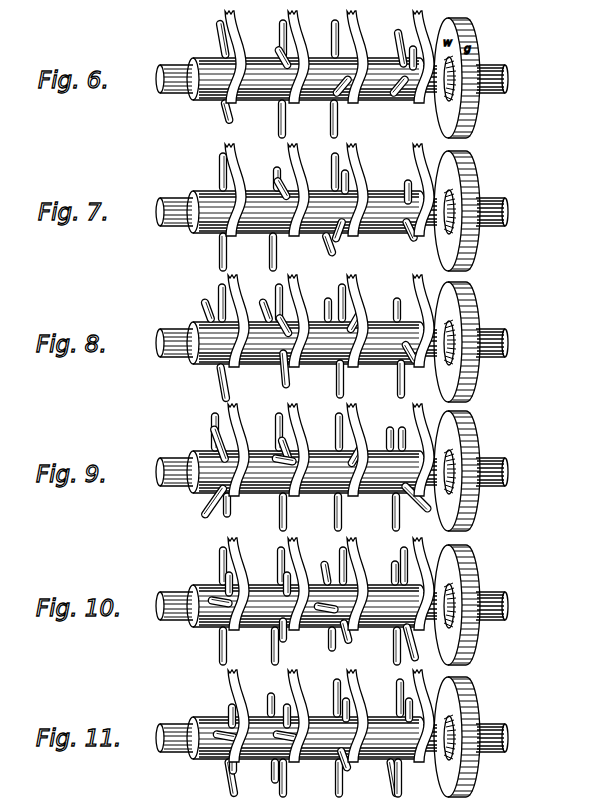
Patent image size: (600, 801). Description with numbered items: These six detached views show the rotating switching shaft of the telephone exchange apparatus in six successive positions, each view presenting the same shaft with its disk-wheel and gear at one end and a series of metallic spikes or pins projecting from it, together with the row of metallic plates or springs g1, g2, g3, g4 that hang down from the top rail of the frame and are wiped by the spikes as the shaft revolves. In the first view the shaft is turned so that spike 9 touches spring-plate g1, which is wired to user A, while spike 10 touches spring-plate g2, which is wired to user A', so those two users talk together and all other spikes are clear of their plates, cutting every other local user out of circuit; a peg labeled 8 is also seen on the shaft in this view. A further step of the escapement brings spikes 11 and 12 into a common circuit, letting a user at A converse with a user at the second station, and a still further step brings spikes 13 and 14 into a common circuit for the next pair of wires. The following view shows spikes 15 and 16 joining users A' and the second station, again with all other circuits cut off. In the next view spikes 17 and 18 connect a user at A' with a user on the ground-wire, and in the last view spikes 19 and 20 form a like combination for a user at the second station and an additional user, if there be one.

In FIG. 6, the peg 8 is at (229, 116).
In FIG. 7, the spike 9 is at (413, 236).
In FIG. 6, the spike 10 is at (347, 90).
In FIG. 7, the spike 10 is at (345, 244).
In FIG. 7, the spike 11 is at (394, 226).
In FIG. 8, the spike 11 is at (416, 361).
In FIG. 7, the spike 12 is at (288, 218).
In FIG. 8, the spike 12 is at (294, 369).
In FIG. 8, the spike 13 is at (395, 355).
In FIG. 9, the spike 13 is at (417, 498).
In FIG. 8, the spike 14 is at (218, 360).
In FIG. 9, the spike 14 is at (224, 501).
In FIG. 9, the spike 15 is at (347, 461).
In FIG. 10, the spike 15 is at (347, 626).
In FIG. 9, the spike 16 is at (282, 466).
In FIG. 10, the spike 16 is at (288, 641).
In FIG. 10, the spike 17 is at (330, 604).
In FIG. 11, the spike 17 is at (352, 772).
In FIG. 10, the spike 18 is at (220, 603).
In FIG. 11, the spike 18 is at (241, 773).
In FIG. 6, the spike 19 is at (408, 92).
In FIG. 11, the spike 19 is at (285, 738).
In FIG. 11, the spike 20 is at (225, 738).
In FIG. 6, the spring-plate g1 is at (425, 54).
In FIG. 7, the spring-plate g1 is at (425, 189).
In FIG. 8, the spring-plate g1 is at (425, 320).
In FIG. 6, the spring-plate g2 is at (359, 56).
In FIG. 9, the spring-plate g2 is at (360, 449).
In FIG. 10, the spring-plate g2 is at (360, 584).
In FIG. 7, the spring-plate g3 is at (300, 188).
In FIG. 9, the spring-plate g3 is at (300, 450).
In FIG. 11, the spring-plate g3 is at (300, 714).
In FIG. 8, the spring-plate g4 is at (242, 321).
In FIG. 10, the spring-plate g4 is at (242, 584).
In FIG. 11, the spring-plate g4 is at (242, 715).